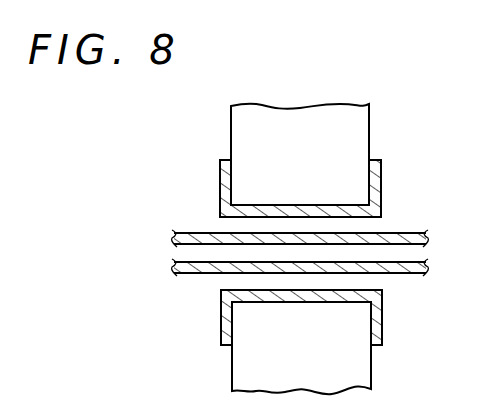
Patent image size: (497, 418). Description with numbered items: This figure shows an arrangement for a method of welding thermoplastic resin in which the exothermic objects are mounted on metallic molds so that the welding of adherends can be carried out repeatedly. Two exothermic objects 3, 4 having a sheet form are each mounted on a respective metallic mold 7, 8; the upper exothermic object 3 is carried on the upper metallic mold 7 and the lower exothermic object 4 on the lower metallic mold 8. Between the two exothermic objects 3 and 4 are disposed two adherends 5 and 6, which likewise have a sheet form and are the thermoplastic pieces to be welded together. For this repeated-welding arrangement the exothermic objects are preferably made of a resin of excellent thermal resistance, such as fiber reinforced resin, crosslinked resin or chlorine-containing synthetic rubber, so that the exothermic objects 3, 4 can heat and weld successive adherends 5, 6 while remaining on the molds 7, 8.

The exothermic object 3 is at (381, 187).
The exothermic object 4 is at (382, 314).
The adherend 5 is at (412, 231).
The adherend 6 is at (414, 274).
The metallic mold 7 is at (356, 139).
The metallic mold 8 is at (339, 352).